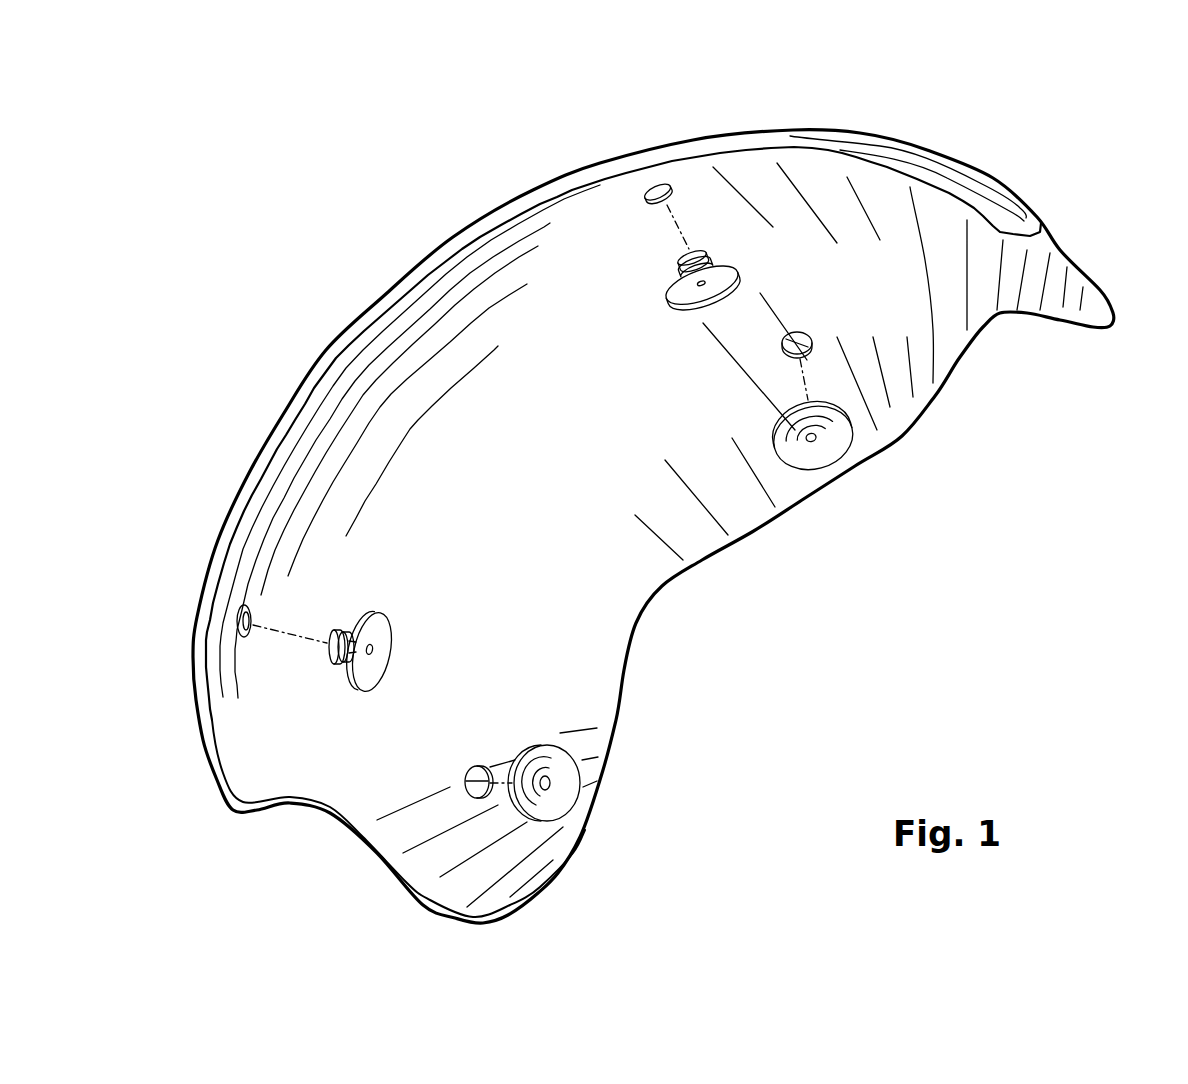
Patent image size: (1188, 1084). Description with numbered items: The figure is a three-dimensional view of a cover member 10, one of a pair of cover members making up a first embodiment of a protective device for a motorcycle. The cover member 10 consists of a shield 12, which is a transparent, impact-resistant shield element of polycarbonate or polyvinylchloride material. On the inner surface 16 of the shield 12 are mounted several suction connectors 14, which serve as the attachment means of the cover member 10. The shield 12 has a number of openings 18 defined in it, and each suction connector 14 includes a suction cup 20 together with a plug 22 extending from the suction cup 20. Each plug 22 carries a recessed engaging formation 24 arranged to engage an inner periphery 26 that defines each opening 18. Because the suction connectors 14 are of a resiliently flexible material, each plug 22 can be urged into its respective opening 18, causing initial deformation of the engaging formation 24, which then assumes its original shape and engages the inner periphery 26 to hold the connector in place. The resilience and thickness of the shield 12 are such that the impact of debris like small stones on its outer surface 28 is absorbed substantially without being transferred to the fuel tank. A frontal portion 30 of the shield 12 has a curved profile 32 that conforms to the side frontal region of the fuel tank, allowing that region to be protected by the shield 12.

The cover member 10 is at (1062, 135).
The shield 12 is at (718, 556).
The suction connector 14 is at (672, 293).
The inner surface 16 is at (529, 503).
The opening 18 is at (663, 178).
The suction cup 20 is at (743, 274).
The plug 22 is at (668, 268).
The engaging formation 24 is at (694, 256).
The inner periphery 26 is at (646, 200).
The outer surface 28 is at (923, 158).
The frontal portion 30 is at (997, 188).
The curved profile 32 is at (1120, 284).